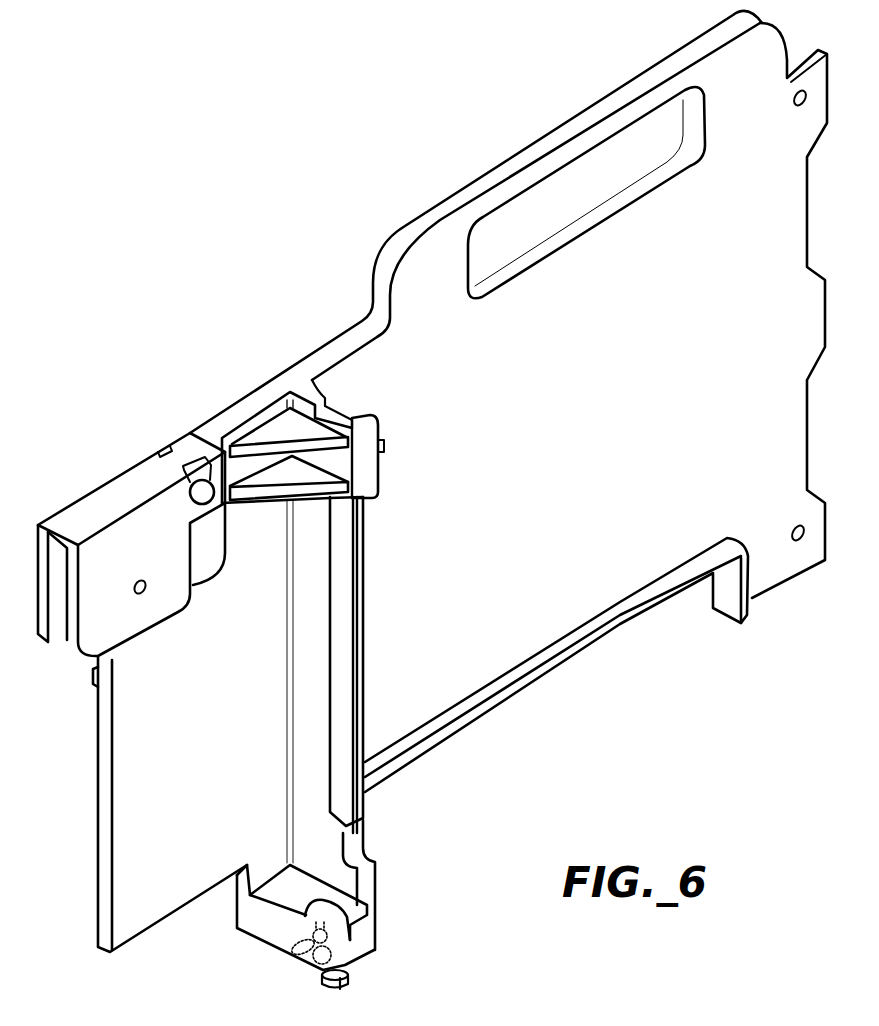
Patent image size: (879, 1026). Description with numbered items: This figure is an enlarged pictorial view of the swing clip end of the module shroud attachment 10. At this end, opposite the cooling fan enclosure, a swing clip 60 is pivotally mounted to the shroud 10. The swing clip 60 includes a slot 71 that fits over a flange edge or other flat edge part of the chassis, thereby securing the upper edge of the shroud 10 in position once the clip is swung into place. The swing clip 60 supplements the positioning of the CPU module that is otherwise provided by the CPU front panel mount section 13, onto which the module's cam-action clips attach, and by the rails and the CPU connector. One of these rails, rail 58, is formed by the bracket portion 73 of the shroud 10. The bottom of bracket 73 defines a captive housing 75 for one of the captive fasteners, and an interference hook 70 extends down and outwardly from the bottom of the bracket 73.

The module shroud attachment 10 is at (143, 388).
The CPU front panel mount section 13 is at (250, 408).
The rail 58 is at (372, 655).
The swing clip 60 is at (130, 487).
The slot 71 is at (63, 655).
The bracket portion 73 is at (352, 843).
The captive housing 75 is at (357, 950).
The interference hook 70 is at (350, 975).